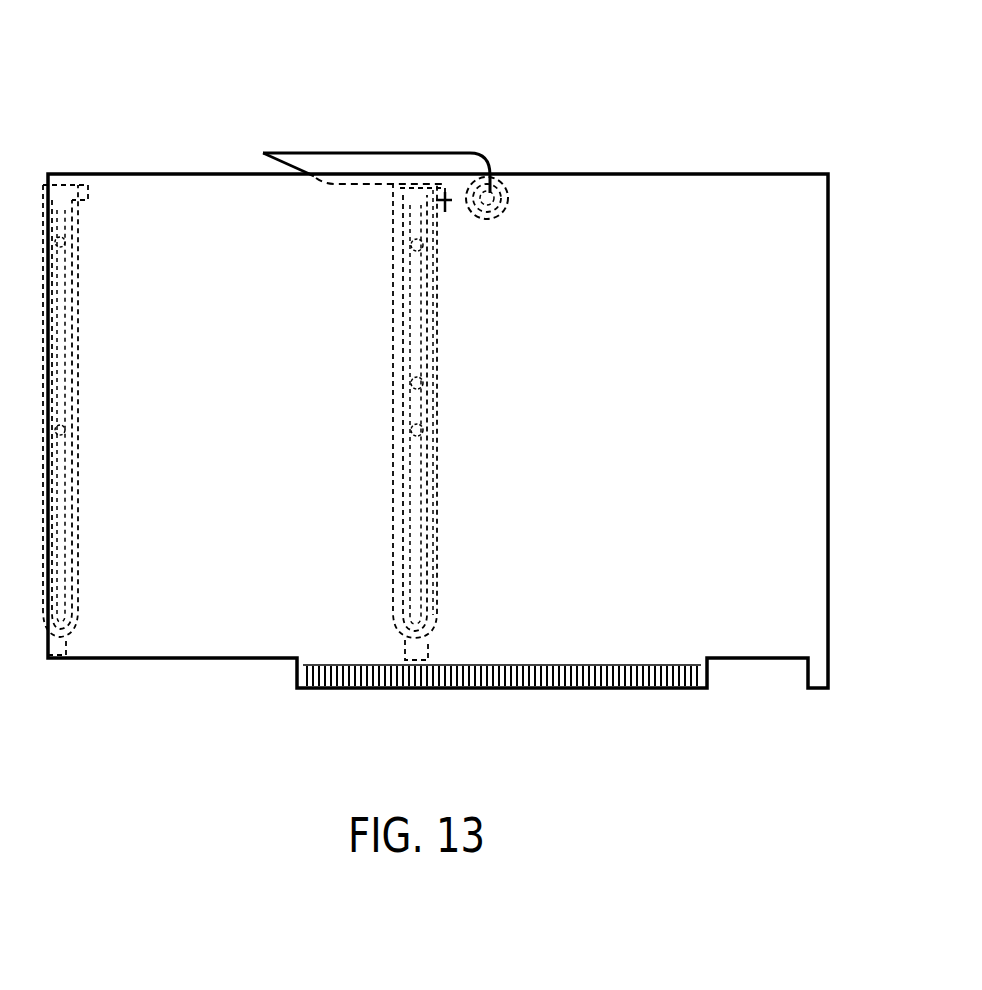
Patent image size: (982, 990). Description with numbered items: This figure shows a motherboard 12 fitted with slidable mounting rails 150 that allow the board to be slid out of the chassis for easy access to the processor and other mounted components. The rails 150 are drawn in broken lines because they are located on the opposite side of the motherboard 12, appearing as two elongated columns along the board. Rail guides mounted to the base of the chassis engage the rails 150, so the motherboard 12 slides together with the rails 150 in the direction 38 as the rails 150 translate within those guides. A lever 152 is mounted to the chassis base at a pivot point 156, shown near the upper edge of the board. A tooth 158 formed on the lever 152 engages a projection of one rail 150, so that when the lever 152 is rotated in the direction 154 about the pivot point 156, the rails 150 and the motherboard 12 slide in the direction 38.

The motherboard 12 is at (806, 286).
The direction 38 is at (179, 227).
The slidable mounting rails 150 is at (76, 528).
The lever 152 is at (476, 151).
The direction 154 is at (368, 20).
The pivot point 156 is at (490, 195).
The tooth 158 is at (448, 207).